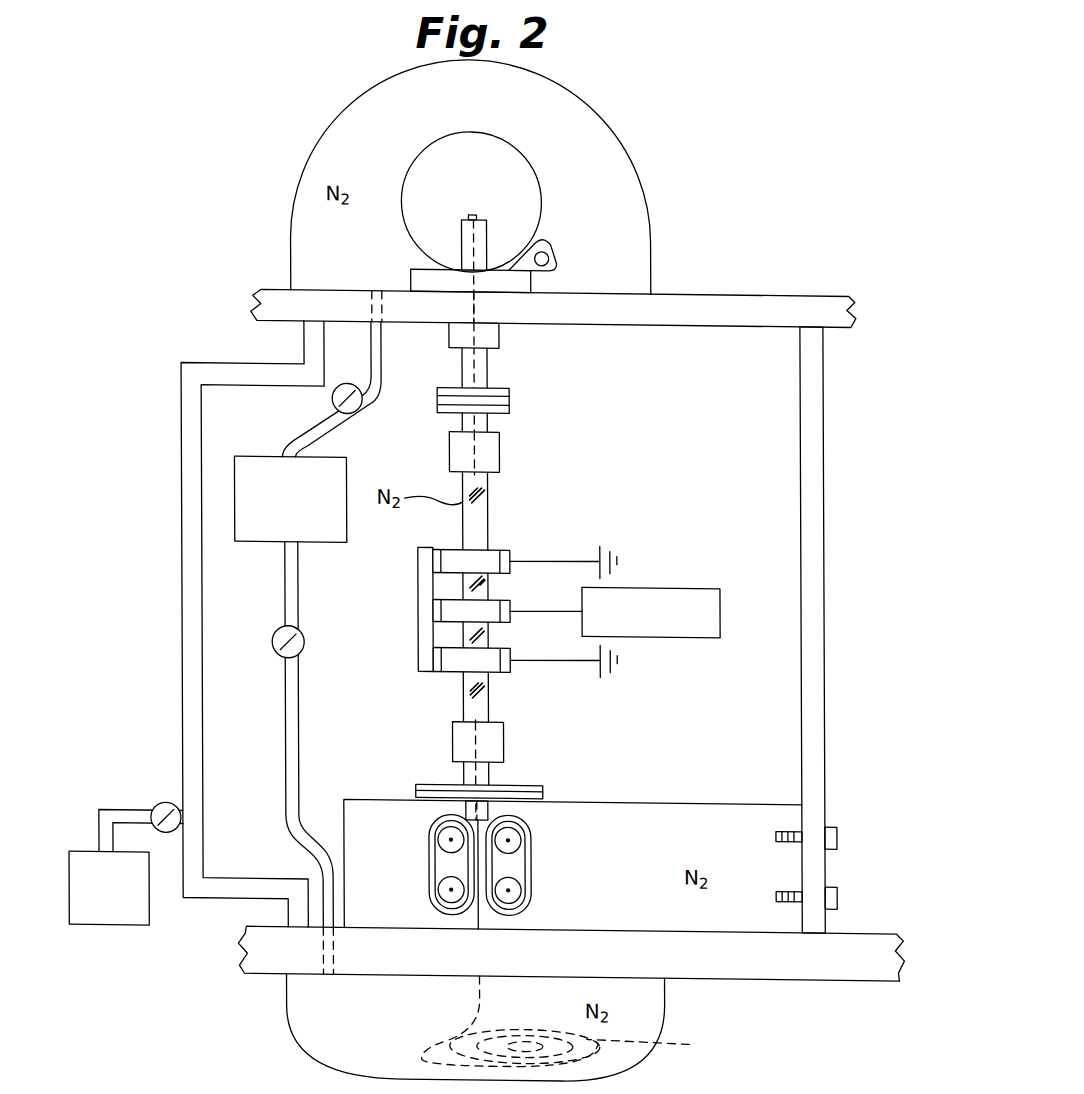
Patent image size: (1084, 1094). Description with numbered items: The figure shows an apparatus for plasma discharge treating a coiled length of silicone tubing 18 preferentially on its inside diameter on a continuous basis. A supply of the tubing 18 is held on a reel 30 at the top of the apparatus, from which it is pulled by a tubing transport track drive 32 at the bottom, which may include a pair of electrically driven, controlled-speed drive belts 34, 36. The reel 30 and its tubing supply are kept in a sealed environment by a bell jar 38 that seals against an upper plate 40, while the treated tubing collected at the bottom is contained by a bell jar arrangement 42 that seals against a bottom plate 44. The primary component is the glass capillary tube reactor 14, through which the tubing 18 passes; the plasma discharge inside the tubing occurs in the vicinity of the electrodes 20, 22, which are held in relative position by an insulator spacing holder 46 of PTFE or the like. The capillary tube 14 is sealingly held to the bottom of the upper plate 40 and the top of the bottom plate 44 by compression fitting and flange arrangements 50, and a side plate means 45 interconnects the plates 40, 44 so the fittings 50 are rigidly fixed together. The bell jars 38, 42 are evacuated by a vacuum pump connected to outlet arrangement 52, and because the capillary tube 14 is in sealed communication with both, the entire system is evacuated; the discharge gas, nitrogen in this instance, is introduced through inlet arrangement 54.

The glass capillary tube reactor 14 is at (488, 530).
The tubing 18 is at (553, 250).
The electrode 20 is at (508, 550).
The electrode 22 is at (500, 622).
The reel 30 is at (542, 197).
The tubing transport track drive 32 is at (551, 845).
The drive belt 34 is at (428, 866).
The drive belt 36 is at (530, 869).
The bell jar 38 is at (333, 128).
The upper plate 40 is at (790, 292).
The bell jar arrangement 42 is at (287, 1010).
The bottom plate 44 is at (830, 976).
The side plate means 45 is at (818, 660).
The insulator spacing holder 46 is at (418, 633).
The compression fitting and flange arrangements 50 is at (508, 332).
The outlet arrangement 52 is at (135, 929).
The inlet arrangement 54 is at (347, 472).